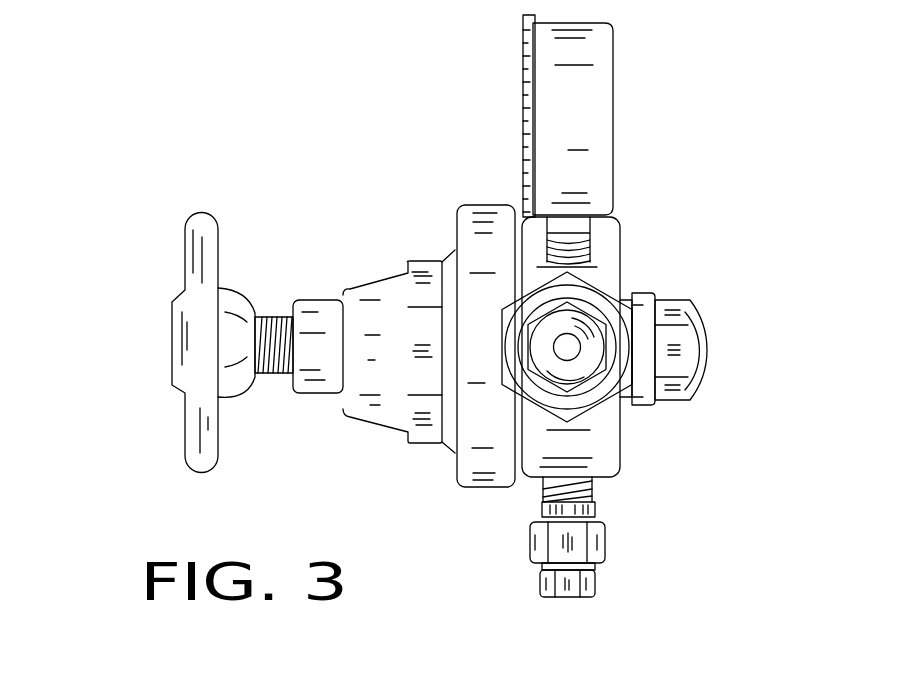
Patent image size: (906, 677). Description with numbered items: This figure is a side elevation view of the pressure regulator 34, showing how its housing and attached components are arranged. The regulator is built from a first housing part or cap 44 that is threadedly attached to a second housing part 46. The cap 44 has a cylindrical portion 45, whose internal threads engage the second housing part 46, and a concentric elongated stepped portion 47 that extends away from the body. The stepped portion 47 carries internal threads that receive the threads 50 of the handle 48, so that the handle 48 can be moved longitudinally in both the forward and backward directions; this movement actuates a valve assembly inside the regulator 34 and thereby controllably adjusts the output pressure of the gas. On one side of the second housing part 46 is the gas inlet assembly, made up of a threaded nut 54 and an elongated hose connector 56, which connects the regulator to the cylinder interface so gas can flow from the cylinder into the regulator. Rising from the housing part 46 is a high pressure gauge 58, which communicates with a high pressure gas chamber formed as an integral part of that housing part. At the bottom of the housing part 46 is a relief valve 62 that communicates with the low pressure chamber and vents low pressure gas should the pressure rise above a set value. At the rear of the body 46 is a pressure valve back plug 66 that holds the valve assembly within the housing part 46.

The pressure regulator 34 is at (284, 163).
The first housing part or cap 44 is at (378, 243).
The cylindrical portion 45 is at (473, 467).
The second housing part 46 is at (607, 242).
The elongated stepped portion 47 is at (387, 400).
The handle 48 is at (195, 288).
The threads 50 is at (257, 317).
The threaded nut 54 is at (590, 298).
The elongated hose connector 56 is at (590, 360).
The high pressure gauge 58 is at (595, 97).
The relief valve 62 is at (600, 542).
The pressure valve back plug 66 is at (697, 350).